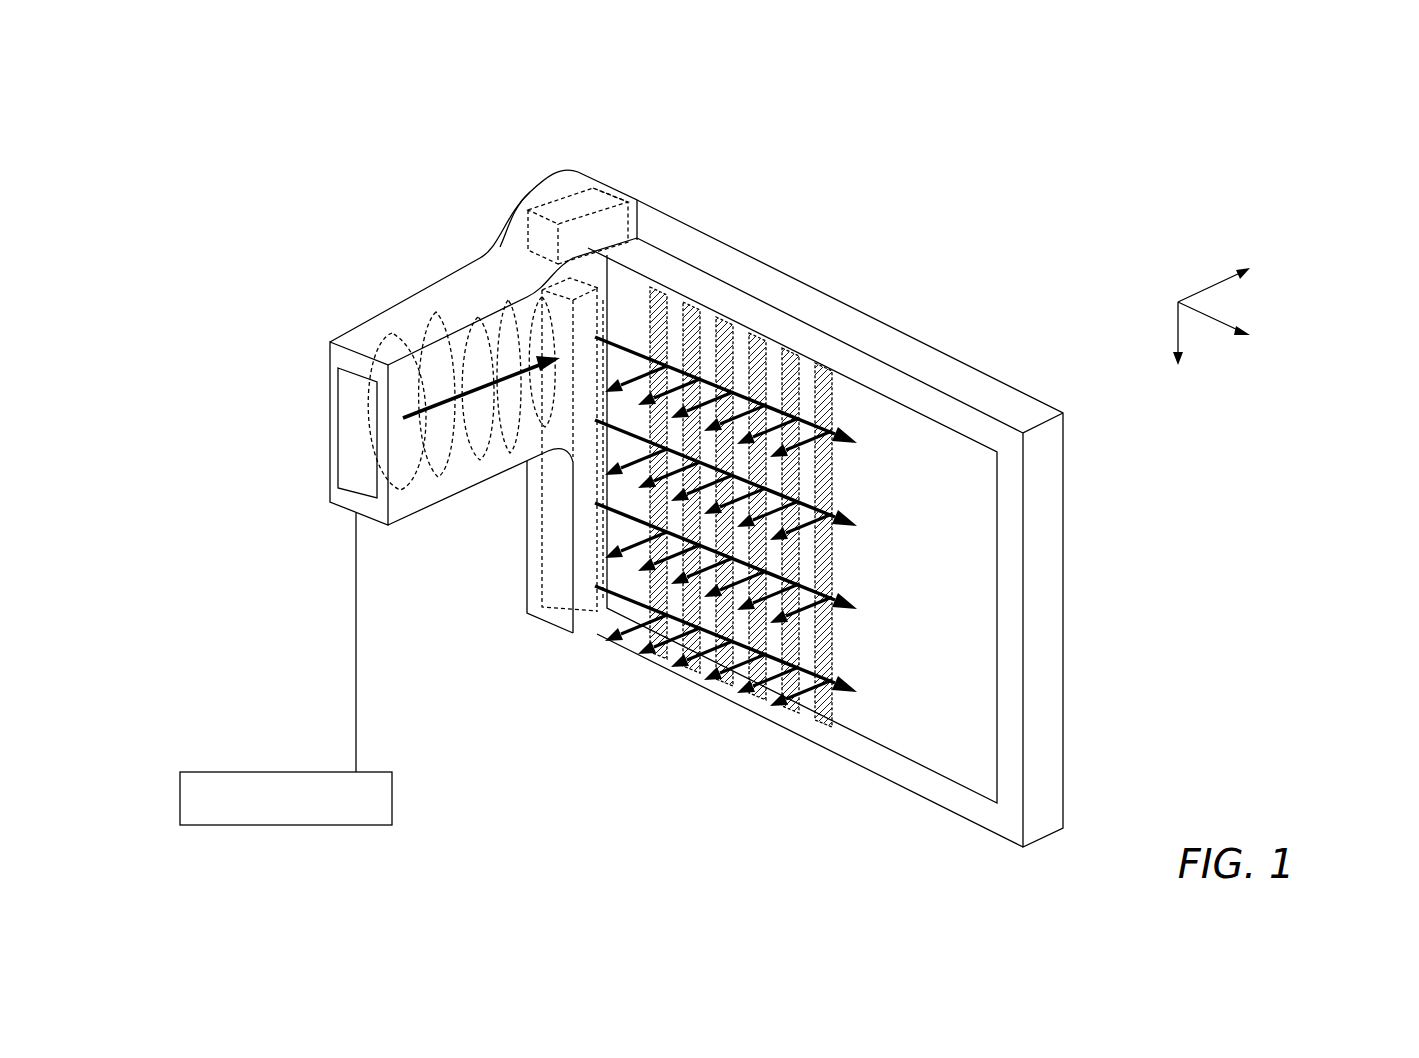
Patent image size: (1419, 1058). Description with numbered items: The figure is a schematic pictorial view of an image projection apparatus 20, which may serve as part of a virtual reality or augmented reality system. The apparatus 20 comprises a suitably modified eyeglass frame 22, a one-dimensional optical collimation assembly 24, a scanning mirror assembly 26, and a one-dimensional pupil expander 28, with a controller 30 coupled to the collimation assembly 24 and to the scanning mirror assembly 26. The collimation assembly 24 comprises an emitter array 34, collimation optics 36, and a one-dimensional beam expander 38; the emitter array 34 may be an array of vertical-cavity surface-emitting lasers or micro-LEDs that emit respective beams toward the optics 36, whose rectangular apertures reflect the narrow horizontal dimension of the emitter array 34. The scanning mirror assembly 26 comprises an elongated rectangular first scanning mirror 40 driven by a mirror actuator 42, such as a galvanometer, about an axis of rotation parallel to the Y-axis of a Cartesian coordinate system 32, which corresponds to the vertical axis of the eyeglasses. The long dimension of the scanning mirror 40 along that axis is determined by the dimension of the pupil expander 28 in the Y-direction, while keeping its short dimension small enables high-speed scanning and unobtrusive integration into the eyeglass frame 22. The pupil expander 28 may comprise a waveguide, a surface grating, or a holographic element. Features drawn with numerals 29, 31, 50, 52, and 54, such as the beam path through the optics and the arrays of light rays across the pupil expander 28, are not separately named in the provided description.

The image projection apparatus 20 is at (190, 158).
The eyeglass frame 22 is at (742, 260).
The 1D optical collimation assembly 24 is at (440, 287).
The scanning mirror assembly 26 is at (546, 180).
The 1D pupil expander 28 is at (810, 407).
The edge of panel 29 is at (598, 555).
The controller 30 is at (286, 772).
The display surface 31 is at (967, 462).
The Cartesian coordinate system 32 is at (1310, 253).
The emitter array 34 is at (358, 433).
The collimation optics 36 is at (465, 445).
The 1D beam expander 38 is at (547, 527).
The first scanning mirror 40 is at (627, 197).
The mirror actuator 42 is at (604, 188).
The lens elements 50 is at (415, 385).
The light rays 52 is at (630, 427).
The output light 54 is at (775, 690).